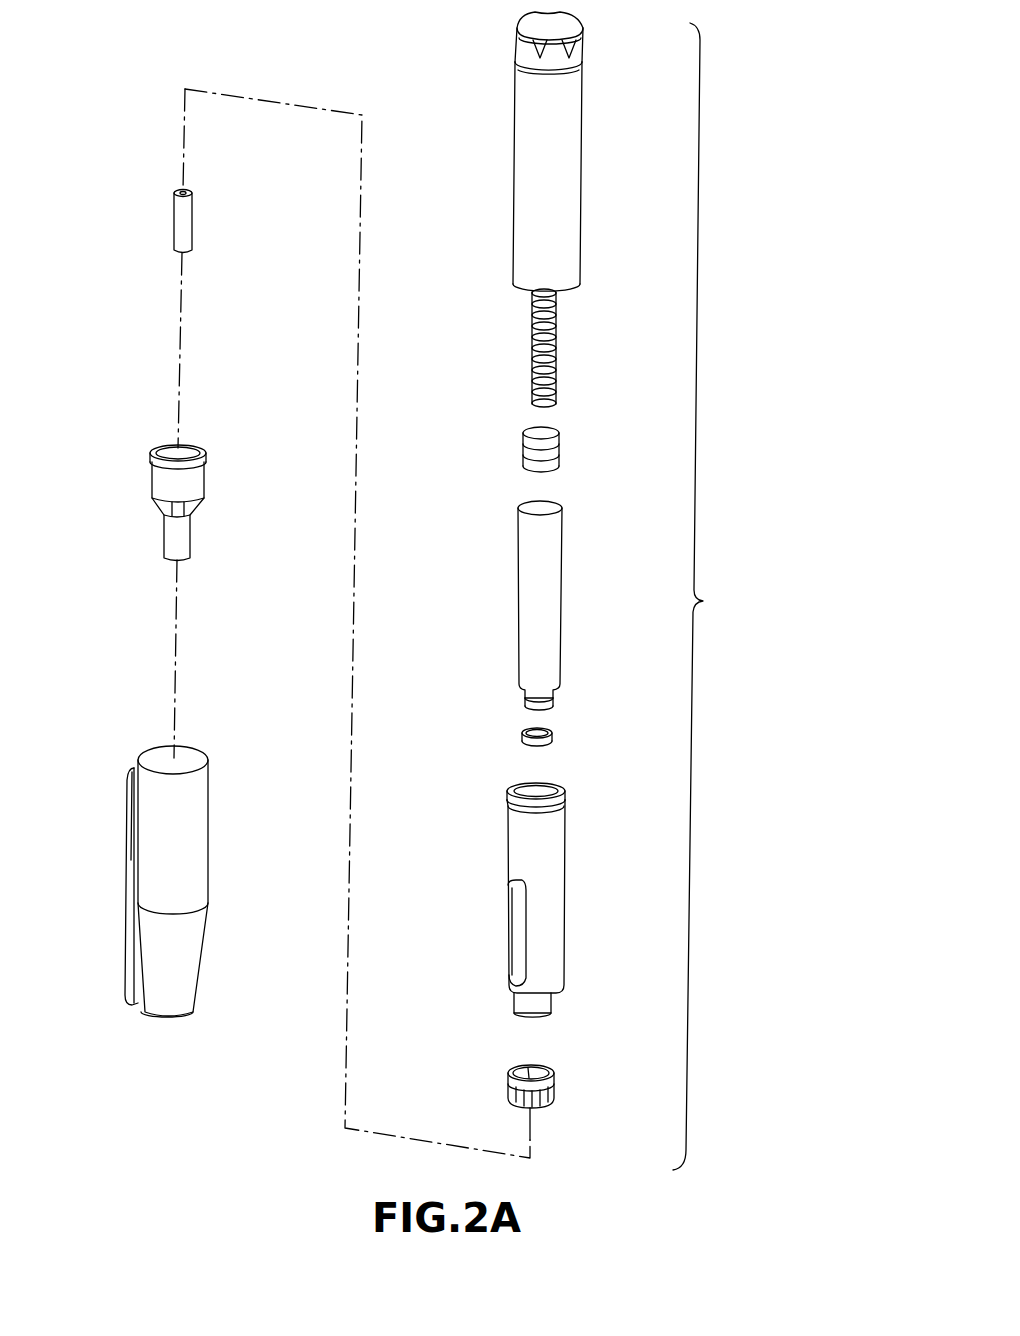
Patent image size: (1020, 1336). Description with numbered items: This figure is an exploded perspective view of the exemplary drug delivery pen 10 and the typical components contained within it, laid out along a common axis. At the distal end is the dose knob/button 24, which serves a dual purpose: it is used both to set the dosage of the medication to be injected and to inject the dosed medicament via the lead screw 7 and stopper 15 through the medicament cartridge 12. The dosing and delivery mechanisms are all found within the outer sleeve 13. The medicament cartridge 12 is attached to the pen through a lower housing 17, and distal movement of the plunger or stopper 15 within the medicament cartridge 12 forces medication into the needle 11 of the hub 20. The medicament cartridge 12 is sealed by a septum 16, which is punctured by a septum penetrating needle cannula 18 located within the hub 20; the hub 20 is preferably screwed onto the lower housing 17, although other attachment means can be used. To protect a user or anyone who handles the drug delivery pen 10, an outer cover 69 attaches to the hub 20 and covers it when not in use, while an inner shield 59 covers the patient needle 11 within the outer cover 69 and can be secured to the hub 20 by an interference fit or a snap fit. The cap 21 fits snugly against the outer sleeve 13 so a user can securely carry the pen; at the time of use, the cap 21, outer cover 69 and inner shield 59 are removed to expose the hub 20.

The drug delivery pen 10 is at (713, 596).
The dose knob/button 24 is at (582, 50).
The outer sleeve 13 is at (582, 219).
The lead screw 7 is at (557, 345).
The stopper 15 is at (560, 445).
The medicament cartridge 12 is at (562, 598).
The septum 16 is at (552, 740).
The lower housing 17 is at (565, 905).
The septum penetrating needle cannula 18 is at (528, 1070).
The hub 20 is at (556, 1083).
The needle 11 is at (532, 1130).
The inner shield 59 is at (175, 220).
The outer cover 69 is at (150, 490).
The cap 21 is at (210, 852).